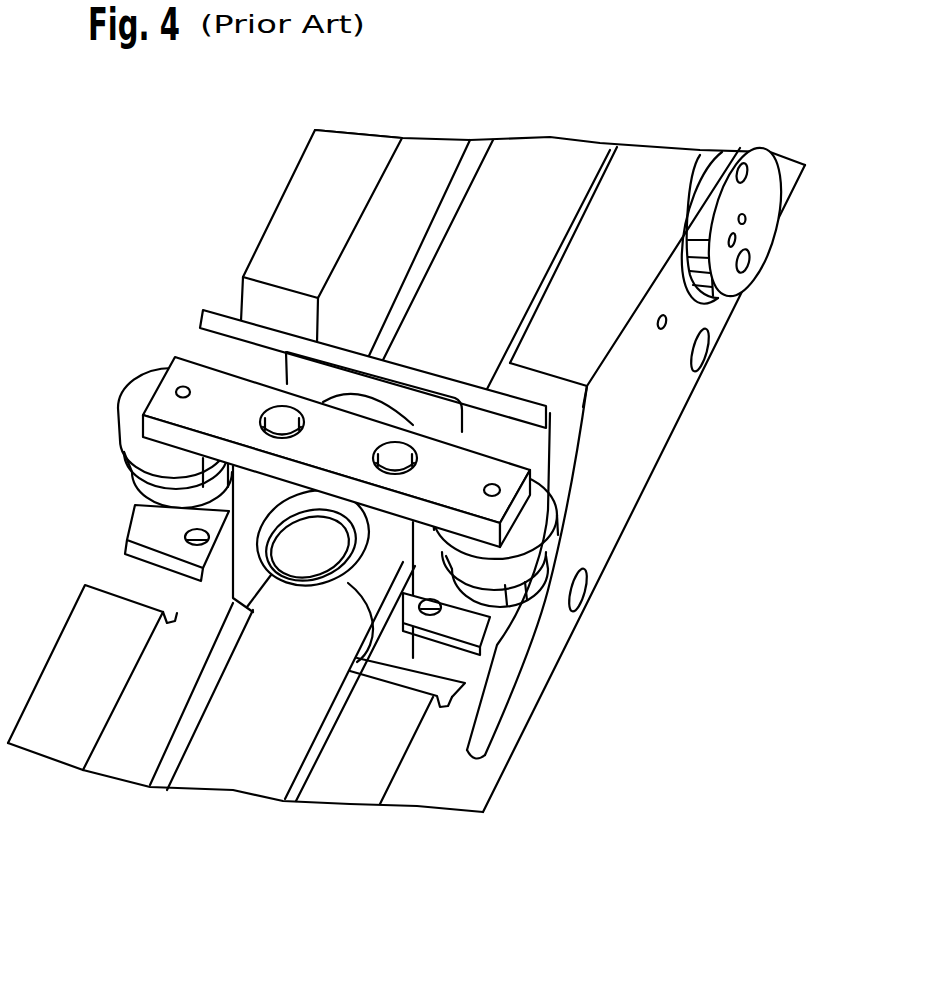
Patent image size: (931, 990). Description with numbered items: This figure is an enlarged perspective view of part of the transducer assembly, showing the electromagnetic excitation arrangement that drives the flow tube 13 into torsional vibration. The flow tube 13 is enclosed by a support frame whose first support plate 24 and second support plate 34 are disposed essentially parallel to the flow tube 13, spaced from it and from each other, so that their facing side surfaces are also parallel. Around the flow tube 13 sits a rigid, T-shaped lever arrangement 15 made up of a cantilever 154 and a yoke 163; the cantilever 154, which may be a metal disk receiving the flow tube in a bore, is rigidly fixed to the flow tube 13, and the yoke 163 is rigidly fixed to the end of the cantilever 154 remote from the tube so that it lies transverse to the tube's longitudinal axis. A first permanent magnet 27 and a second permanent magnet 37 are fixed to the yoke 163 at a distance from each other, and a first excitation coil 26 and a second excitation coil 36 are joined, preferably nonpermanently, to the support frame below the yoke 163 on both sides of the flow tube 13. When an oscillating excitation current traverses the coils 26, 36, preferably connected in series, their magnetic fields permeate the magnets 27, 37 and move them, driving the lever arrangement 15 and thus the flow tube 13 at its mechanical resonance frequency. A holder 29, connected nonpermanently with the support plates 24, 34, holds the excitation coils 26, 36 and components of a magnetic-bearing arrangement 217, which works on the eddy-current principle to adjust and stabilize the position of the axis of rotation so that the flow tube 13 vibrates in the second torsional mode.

The flow tube 13 is at (298, 742).
The lever arrangement 15 is at (130, 377).
The first support plate 24 is at (278, 240).
The first excitation coil 26 is at (130, 483).
The first permanent magnet 27 is at (118, 398).
The holder 29 is at (538, 437).
The second support plate 34 is at (613, 273).
The second excitation coil 36 is at (527, 611).
The second permanent magnet 37 is at (553, 563).
The cantilever 154 is at (250, 498).
The yoke 163 is at (195, 375).
The magnetic-bearing arrangement 217 is at (300, 548).